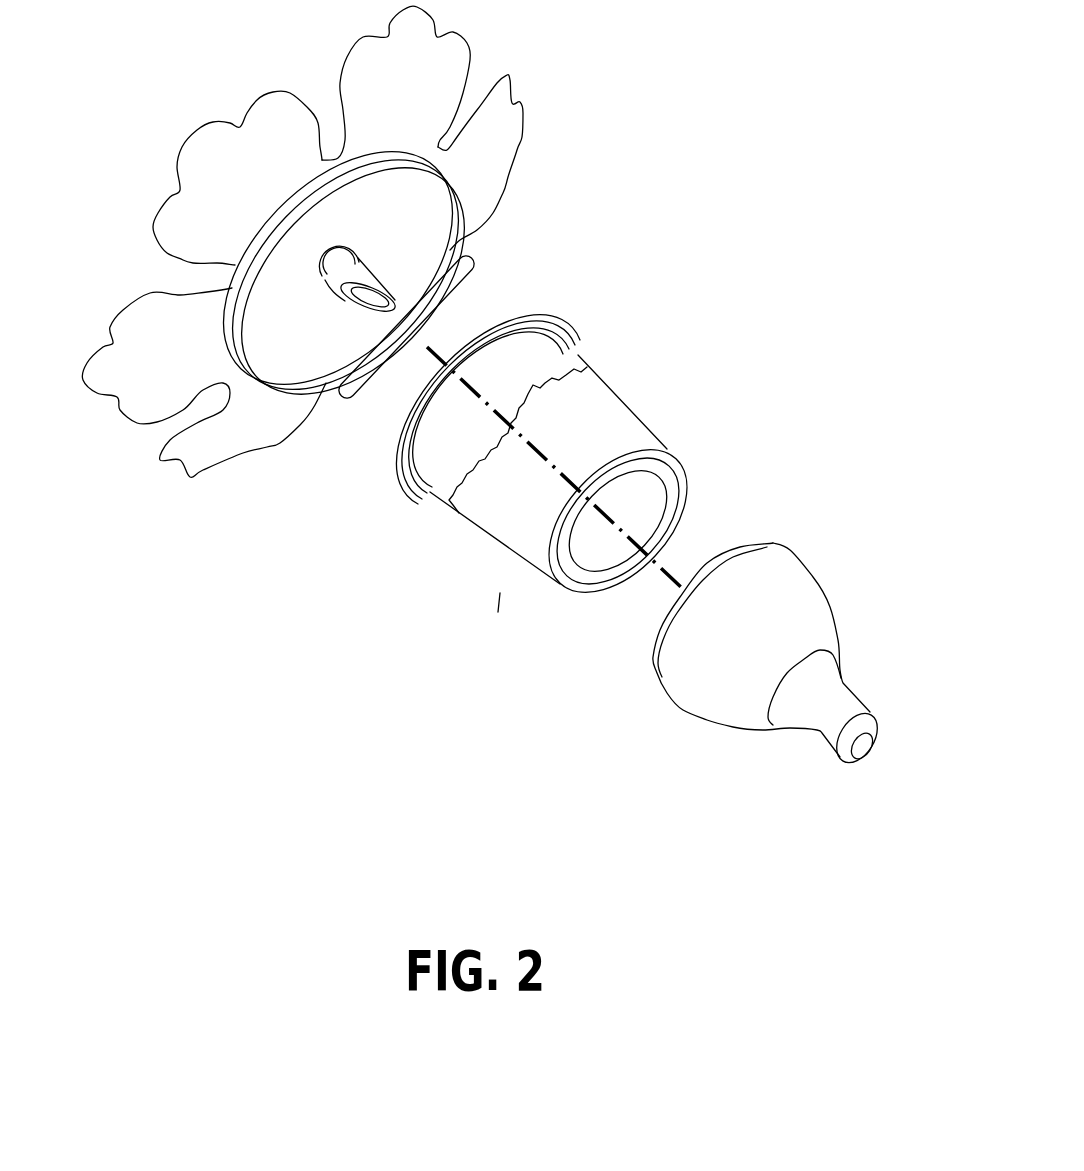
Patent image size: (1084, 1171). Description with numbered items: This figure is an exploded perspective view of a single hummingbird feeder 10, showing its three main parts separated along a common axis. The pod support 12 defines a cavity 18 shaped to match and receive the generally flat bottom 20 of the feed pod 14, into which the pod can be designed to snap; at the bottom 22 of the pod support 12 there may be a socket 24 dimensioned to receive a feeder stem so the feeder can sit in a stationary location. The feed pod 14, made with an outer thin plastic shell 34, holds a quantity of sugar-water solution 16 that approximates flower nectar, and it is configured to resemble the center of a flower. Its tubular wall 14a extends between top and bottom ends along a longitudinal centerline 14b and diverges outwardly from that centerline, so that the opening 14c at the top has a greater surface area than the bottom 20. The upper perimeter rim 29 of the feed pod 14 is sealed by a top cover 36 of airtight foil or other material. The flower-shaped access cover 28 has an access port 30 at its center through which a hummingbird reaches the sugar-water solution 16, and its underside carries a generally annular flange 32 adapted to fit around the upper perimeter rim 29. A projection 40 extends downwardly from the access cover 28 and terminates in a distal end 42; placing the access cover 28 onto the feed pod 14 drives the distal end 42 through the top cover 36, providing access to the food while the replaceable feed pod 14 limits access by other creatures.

The hummingbird feeder 10 is at (733, 190).
The pod support 12 is at (817, 597).
The feed pod 14 is at (480, 507).
The tubular wall 14a is at (657, 435).
The longitudinal centerline 14b is at (622, 527).
The opening 14c is at (443, 393).
The sugar-water solution 16 is at (573, 430).
The cavity 18 is at (690, 677).
The bottom 20 is at (680, 492).
The bottom of the pod support 22 is at (845, 680).
The socket 24 is at (838, 743).
The access cover 28 is at (495, 150).
The upper perimeter rim 29 is at (410, 475).
The access port 30 is at (320, 264).
The annular flange 32 is at (450, 252).
The outer thin plastic shell 34 is at (518, 560).
The top cover 36 is at (563, 325).
The projection 40 is at (333, 307).
The distal end 42 is at (397, 306).